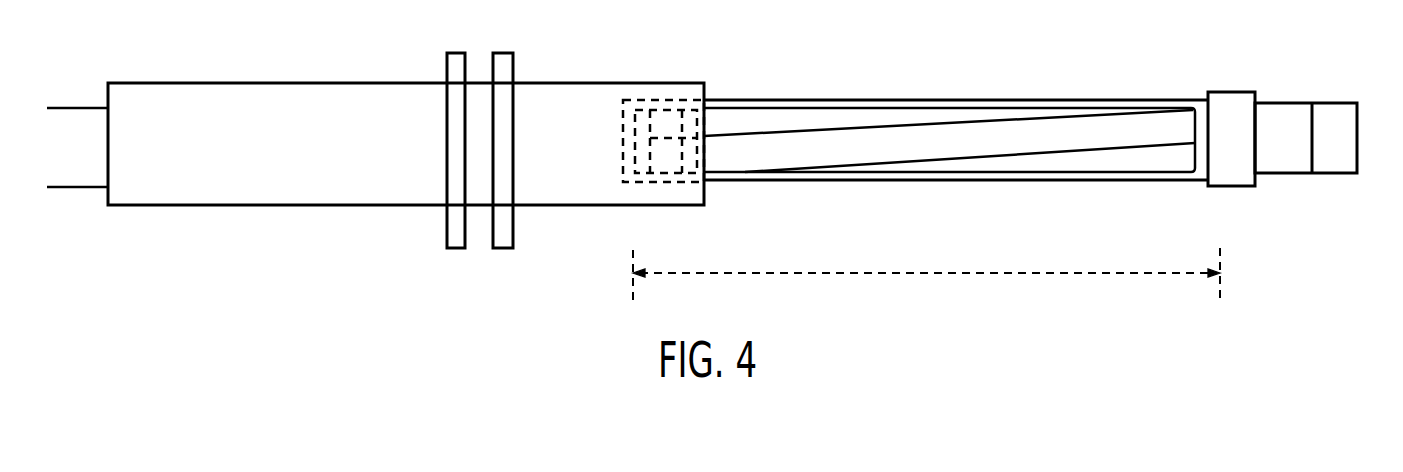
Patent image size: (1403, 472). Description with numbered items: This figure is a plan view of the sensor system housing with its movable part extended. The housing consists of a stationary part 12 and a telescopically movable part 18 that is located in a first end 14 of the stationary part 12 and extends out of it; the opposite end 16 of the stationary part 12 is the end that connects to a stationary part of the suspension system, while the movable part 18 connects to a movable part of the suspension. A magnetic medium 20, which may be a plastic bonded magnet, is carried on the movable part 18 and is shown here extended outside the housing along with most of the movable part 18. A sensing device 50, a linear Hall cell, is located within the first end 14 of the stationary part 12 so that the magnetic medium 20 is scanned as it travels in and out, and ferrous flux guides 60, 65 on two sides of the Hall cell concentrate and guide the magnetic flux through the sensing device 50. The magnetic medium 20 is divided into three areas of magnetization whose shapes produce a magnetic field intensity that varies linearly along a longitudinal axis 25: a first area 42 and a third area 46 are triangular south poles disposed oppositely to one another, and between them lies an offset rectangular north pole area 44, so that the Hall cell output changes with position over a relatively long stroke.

The stationary part 12 is at (363, 165).
The first end 14 is at (640, 198).
The one end 16 is at (71, 175).
The telescopically movable part 18 is at (348, 210).
The magnetic medium 20 is at (897, 185).
The longitudinal axis 25 is at (980, 273).
The first area of magnetization 42 is at (884, 115).
The north pole area 44 is at (1013, 130).
The third area of magnetization 46 is at (1118, 160).
The sensing device 50 is at (655, 148).
The flux guide 60 is at (665, 130).
The flux guide 65 is at (672, 170).